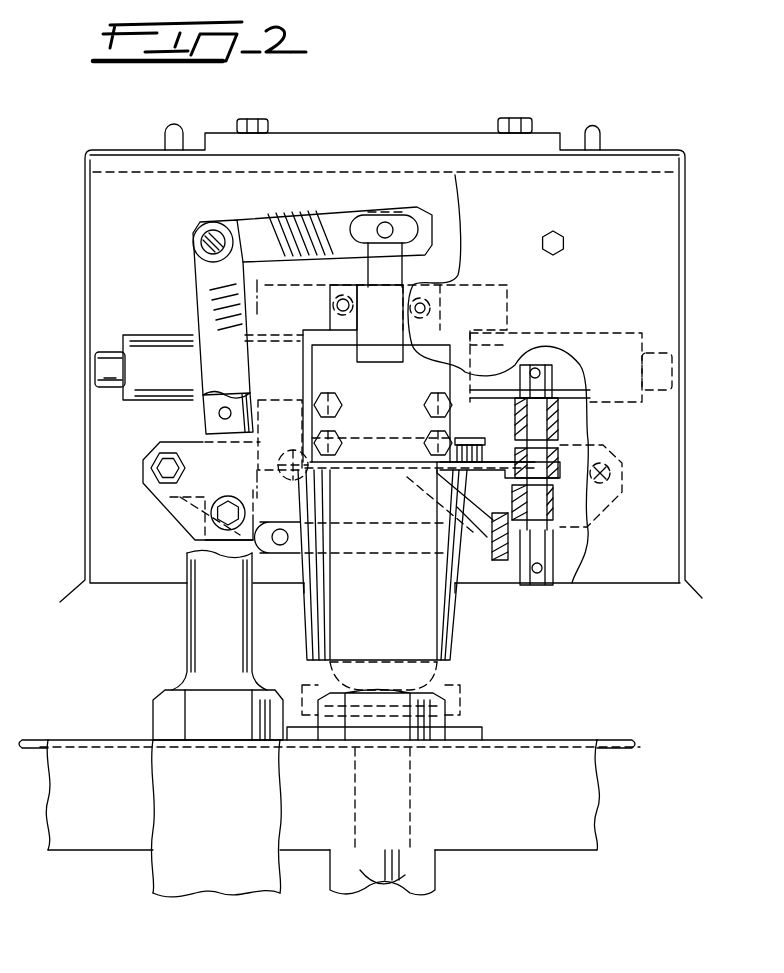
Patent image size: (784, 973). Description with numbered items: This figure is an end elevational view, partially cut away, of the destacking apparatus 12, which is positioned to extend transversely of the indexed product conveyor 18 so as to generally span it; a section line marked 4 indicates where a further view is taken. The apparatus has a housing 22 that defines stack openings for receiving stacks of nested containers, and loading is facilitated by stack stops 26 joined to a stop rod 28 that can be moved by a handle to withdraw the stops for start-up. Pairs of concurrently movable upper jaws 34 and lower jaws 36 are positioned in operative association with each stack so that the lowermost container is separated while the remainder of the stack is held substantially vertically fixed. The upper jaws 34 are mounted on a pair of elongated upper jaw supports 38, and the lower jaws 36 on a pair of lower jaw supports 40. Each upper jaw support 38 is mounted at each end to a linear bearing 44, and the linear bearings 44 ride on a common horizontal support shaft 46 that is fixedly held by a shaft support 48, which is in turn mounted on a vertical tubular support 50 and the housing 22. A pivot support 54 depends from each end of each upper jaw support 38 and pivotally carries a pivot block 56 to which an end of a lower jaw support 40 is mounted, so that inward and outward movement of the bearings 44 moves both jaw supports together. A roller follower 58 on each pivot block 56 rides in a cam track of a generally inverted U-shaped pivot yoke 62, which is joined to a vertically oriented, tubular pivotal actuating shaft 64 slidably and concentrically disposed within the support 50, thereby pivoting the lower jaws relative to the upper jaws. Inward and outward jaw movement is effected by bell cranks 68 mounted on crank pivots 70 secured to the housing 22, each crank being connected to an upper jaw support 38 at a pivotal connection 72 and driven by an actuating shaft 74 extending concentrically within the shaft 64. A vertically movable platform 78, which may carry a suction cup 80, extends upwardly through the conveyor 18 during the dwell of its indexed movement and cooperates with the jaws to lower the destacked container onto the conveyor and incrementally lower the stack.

The destacking apparatus 12 is at (603, 42).
The product conveyor 18 is at (614, 734).
The housing 22 is at (644, 146).
The stack stops 26 is at (455, 532).
The stop rod 28 is at (503, 560).
The upper jaws 34 is at (505, 448).
The lower jaws 36 is at (477, 472).
The upper jaw supports 38 is at (205, 447).
The lower jaw supports 40 is at (206, 512).
The linear bearings 44 is at (135, 345).
The horizontal support shaft 46 is at (112, 380).
The shaft support 48 is at (342, 405).
The vertical tubular support 50 is at (415, 642).
The pivot support 54 is at (151, 456).
The pivot block 56 is at (172, 503).
The roller follower 58 is at (283, 440).
The pivot yoke 62 is at (386, 315).
The pivotal actuating shaft 64 is at (370, 342).
The bell cranks 68 is at (200, 278).
The crank pivots 70 is at (208, 224).
The pivotal connection 72 is at (208, 386).
The actuating shaft 74 is at (395, 296).
The vertically movable platform 78 is at (455, 705).
The suction cup 80 is at (440, 678).
The section line 4- 4 is at (255, 265).